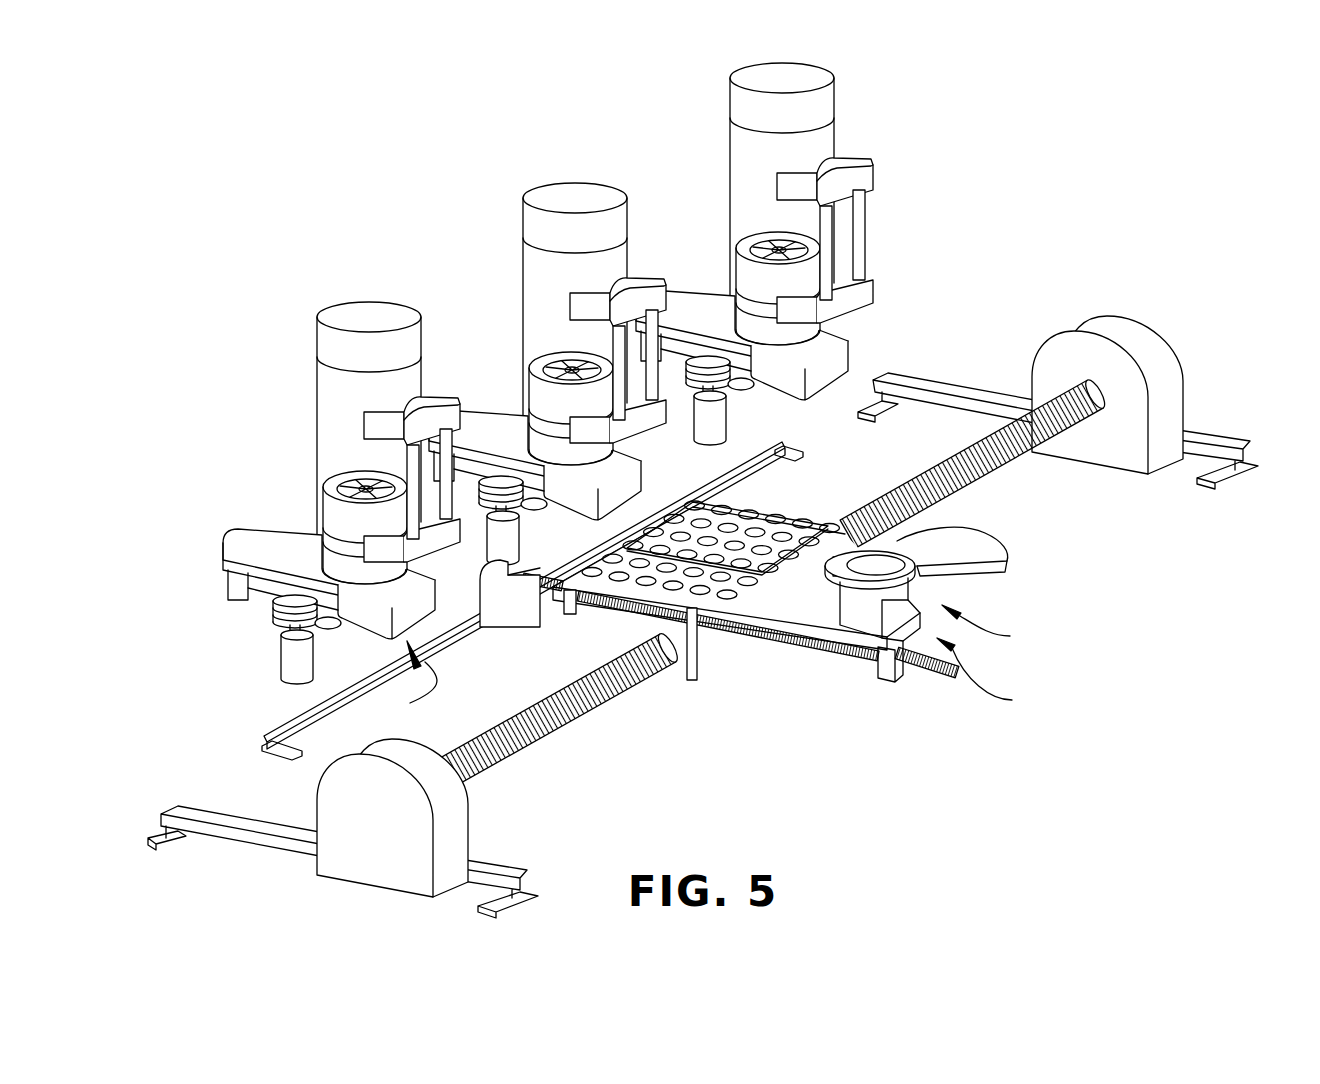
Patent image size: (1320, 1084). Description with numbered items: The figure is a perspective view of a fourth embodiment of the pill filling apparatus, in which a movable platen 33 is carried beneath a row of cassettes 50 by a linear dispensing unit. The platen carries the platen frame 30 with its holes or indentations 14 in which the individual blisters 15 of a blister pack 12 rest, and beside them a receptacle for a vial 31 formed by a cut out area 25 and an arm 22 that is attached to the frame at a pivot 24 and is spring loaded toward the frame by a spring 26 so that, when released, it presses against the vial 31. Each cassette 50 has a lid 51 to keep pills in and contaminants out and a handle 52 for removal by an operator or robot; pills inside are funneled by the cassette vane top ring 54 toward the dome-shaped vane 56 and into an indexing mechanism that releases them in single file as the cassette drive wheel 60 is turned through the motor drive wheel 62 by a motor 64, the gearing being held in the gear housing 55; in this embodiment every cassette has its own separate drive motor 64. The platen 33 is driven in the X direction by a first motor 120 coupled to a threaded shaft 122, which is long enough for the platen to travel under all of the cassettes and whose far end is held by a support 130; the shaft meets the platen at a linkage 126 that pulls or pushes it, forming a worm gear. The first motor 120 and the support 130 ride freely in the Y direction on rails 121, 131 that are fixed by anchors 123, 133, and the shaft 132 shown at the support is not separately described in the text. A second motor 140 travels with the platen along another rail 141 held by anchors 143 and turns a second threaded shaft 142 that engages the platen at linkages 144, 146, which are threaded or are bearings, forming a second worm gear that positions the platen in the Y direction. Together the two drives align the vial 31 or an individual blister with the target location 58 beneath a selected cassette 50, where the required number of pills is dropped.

The blister pack 12 is at (766, 514).
The holes or indentations 14 is at (683, 510).
The blisters 15 is at (812, 530).
The arm 22 is at (915, 597).
The pivot 24 is at (838, 584).
The cut out area 25 is at (993, 627).
The spring 26 is at (812, 582).
The platen frame 30 is at (1015, 563).
The vial 31 is at (995, 543).
The movable platen 33 is at (969, 677).
The cassette 50 is at (554, 397).
The lid 51 is at (585, 187).
The handle 52 is at (880, 212).
The cassette vane top ring 54 is at (340, 505).
The gear housing 55 is at (240, 530).
The dome-shaped vane 56 is at (370, 480).
The target location 58 is at (409, 683).
The cassette drive wheel 60 is at (335, 628).
The motor drive wheel 62 is at (292, 607).
The motor 64 is at (285, 662).
The first motor 120 is at (1175, 386).
The rail 121 is at (970, 390).
The threaded shaft 122 is at (990, 472).
The anchors 123 is at (890, 420).
The linkage 126 is at (690, 670).
The support 130 is at (455, 812).
The rail 131 is at (258, 818).
The lead screw 132 is at (551, 713).
The anchors 133 is at (165, 840).
The second motor 140 is at (535, 568).
The rail 141 is at (487, 648).
The second threaded shaft 142 is at (550, 605).
The anchors 143 is at (262, 746).
The linkage 144 is at (600, 600).
The linkage 146 is at (898, 668).